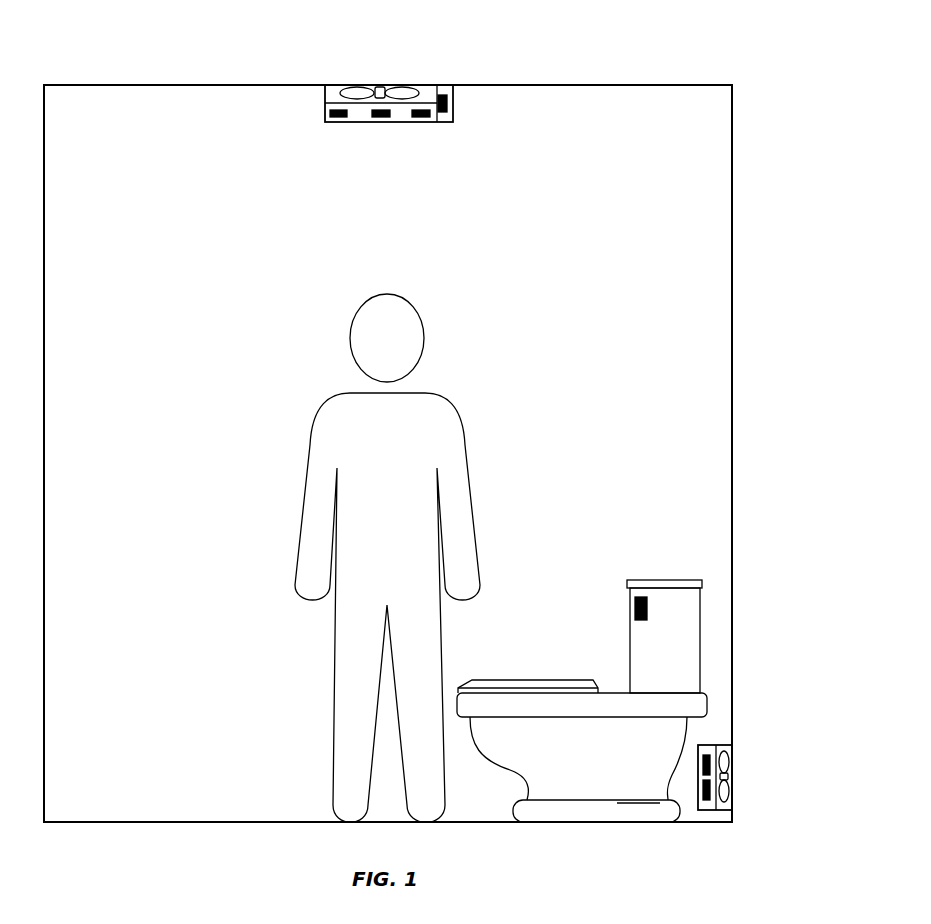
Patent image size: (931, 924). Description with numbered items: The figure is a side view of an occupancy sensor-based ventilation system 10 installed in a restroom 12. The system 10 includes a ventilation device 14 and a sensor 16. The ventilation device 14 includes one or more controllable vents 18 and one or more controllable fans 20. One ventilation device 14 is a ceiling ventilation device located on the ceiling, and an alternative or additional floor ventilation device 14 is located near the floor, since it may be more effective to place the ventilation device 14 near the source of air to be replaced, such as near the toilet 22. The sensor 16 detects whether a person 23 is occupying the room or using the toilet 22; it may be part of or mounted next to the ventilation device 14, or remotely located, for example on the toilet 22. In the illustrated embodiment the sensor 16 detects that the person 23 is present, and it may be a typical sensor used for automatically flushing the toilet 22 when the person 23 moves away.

The occupancy sensor-based ventilation system 10 is at (517, 53).
The restroom 12 is at (167, 660).
The ventilation device 14 is at (378, 122).
The sensor 16 is at (450, 103).
The controllable vents 18 is at (338, 118).
The controllable fans 20 is at (402, 92).
The toilet 22 is at (630, 636).
The person 23 is at (438, 402).